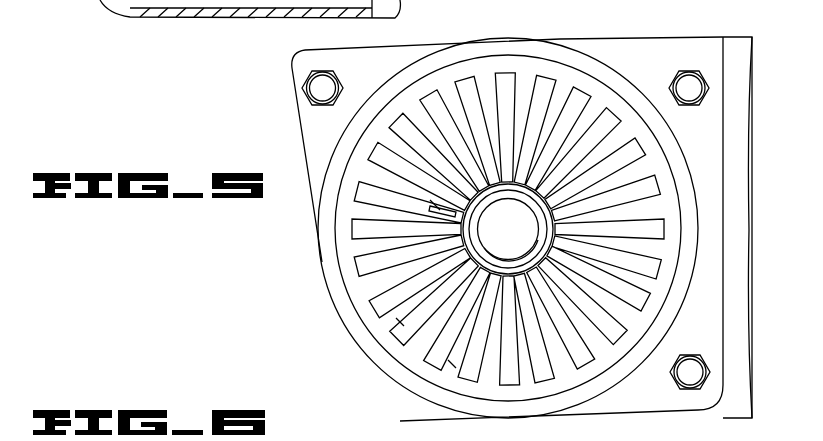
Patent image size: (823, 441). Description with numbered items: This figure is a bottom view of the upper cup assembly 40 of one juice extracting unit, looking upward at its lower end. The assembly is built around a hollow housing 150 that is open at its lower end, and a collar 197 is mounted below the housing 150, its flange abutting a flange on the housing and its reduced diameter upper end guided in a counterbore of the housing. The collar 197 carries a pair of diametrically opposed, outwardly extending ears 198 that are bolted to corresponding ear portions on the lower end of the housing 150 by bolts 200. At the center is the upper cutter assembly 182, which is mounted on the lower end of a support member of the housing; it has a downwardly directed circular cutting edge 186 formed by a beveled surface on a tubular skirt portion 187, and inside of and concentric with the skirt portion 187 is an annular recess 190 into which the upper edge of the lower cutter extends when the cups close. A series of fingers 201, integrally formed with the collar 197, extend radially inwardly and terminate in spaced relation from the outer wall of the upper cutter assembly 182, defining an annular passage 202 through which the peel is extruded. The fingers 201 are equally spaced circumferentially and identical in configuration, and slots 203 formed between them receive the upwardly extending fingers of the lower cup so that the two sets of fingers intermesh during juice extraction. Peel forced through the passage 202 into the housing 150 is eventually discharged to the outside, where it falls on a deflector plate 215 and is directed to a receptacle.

The upper cup assembly 40 is at (505, 221).
The hollow housing 150 is at (112, 10).
The upper cutter assembly 182 is at (525, 222).
The circular cutting edge 186 is at (545, 234).
The tubular skirt portion 187 is at (543, 246).
The annular recess 190 is at (473, 225).
The collar 197 is at (382, 331).
The ears 198 is at (304, 128).
The bolts 200 is at (318, 88).
The fingers 201 is at (436, 205).
The annular passage 202 is at (553, 230).
The slots 203 is at (545, 384).
The deflector plate 215 is at (745, 54).